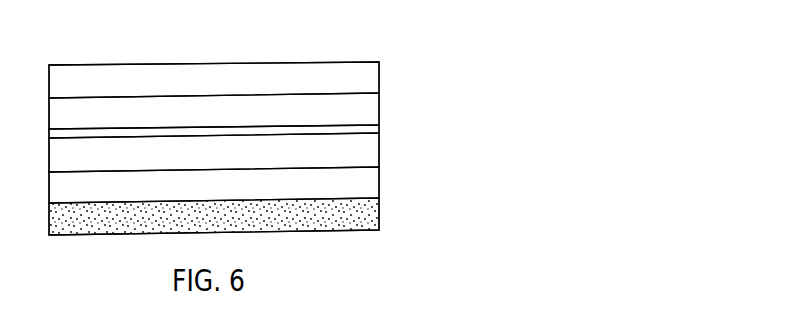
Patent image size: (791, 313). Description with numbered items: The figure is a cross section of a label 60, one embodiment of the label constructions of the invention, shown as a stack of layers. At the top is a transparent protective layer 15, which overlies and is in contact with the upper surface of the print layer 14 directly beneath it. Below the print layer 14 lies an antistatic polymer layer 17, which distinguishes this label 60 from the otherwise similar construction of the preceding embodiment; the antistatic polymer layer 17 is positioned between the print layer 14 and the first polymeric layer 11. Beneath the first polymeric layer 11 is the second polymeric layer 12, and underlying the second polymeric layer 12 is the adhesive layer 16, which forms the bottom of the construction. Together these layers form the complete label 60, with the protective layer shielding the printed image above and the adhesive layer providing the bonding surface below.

The label 60 is at (112, 48).
The transparent protective layer 15 is at (360, 72).
The print layer 14 is at (370, 101).
The antistatic polymer layer 17 is at (364, 134).
The first polymeric layer 11 is at (370, 146).
The second polymeric layer 12 is at (370, 178).
The adhesive layer 16 is at (372, 217).